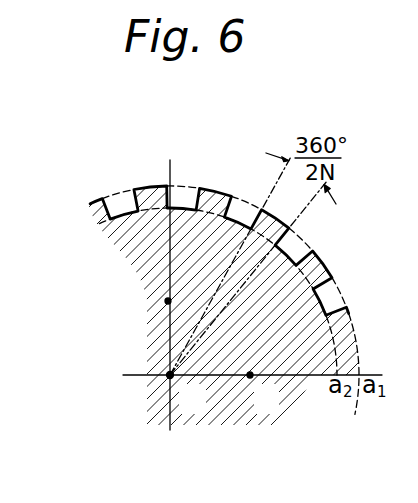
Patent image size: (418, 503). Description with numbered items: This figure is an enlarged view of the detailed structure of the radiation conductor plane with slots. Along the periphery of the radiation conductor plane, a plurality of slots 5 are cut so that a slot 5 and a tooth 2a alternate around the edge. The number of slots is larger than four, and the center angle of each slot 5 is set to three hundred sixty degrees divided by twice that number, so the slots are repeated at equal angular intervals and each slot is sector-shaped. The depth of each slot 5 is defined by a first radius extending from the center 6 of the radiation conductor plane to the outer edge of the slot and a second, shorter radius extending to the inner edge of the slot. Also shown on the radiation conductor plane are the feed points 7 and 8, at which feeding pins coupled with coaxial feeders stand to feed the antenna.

The tooth 2a is at (323, 263).
The slot 5 is at (122, 197).
The center of the radiation conductor plane 6 is at (171, 377).
The feed point 7 is at (170, 301).
The feed point 8 is at (251, 377).